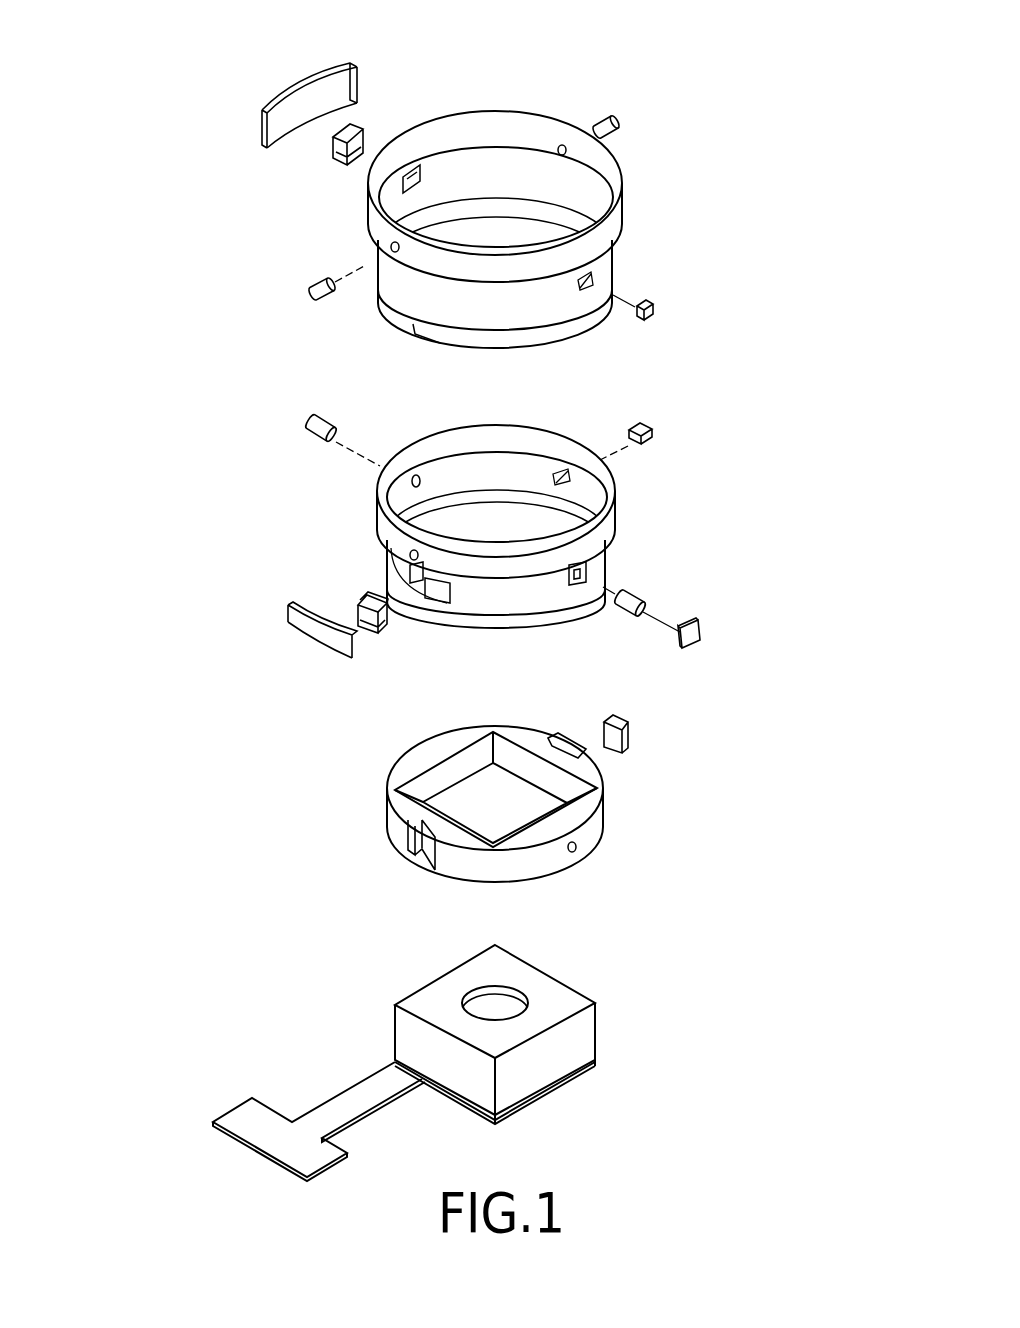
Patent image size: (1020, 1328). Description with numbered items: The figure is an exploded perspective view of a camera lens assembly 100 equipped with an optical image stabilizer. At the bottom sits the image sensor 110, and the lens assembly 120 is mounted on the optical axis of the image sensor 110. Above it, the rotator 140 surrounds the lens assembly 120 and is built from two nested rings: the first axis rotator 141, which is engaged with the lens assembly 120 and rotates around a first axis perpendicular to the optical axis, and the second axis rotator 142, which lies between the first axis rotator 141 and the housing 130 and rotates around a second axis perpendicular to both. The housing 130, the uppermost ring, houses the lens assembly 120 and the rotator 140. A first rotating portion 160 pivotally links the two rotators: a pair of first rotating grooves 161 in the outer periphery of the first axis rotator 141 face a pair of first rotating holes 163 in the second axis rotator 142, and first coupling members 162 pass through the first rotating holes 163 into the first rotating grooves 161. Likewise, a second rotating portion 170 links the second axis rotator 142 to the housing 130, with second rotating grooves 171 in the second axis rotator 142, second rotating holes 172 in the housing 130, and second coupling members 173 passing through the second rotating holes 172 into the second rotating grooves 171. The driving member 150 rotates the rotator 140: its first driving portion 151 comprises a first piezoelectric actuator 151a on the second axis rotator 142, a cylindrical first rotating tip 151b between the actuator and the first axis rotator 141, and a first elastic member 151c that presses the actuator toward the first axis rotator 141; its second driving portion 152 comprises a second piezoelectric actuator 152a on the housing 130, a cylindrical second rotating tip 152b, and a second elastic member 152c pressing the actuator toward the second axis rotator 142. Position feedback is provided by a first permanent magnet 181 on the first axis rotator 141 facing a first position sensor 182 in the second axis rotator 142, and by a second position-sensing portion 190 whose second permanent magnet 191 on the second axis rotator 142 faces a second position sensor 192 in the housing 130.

The camera lens assembly 100 is at (214, 38).
The image sensor 110 is at (567, 1082).
The lens assembly 120 is at (583, 1037).
The housing 130 is at (620, 211).
The rotator 140 is at (559, 648).
The first axis rotator 141 is at (487, 728).
The second axis rotator 142 is at (470, 624).
The driving member 150 is at (89, 187).
The first driving portion 151 is at (181, 543).
The first piezoelectric actuator 151a is at (357, 607).
The first rotating tip 151b is at (360, 597).
The first elastic member 151c is at (295, 630).
The second driving portion 152 is at (149, 137).
The second piezoelectric actuator 152a is at (333, 150).
The second rotating tip 152b is at (403, 183).
The second elastic member 152c is at (262, 135).
The first rotating portion 160 is at (772, 657).
The first rotating grooves 161 is at (577, 846).
The first coupling members 162 is at (333, 418).
The first rotating holes 163 is at (580, 586).
The second rotating portion 170 is at (196, 318).
The second rotating grooves 171 is at (392, 537).
The second rotating holes 172 is at (562, 145).
The second coupling members 173 is at (615, 122).
The first permanent magnet 181 is at (628, 735).
The first position sensor 182 is at (632, 422).
The second position-sensing portion 190 is at (757, 353).
The second permanent magnet 191 is at (694, 622).
The second position sensor 192 is at (653, 312).